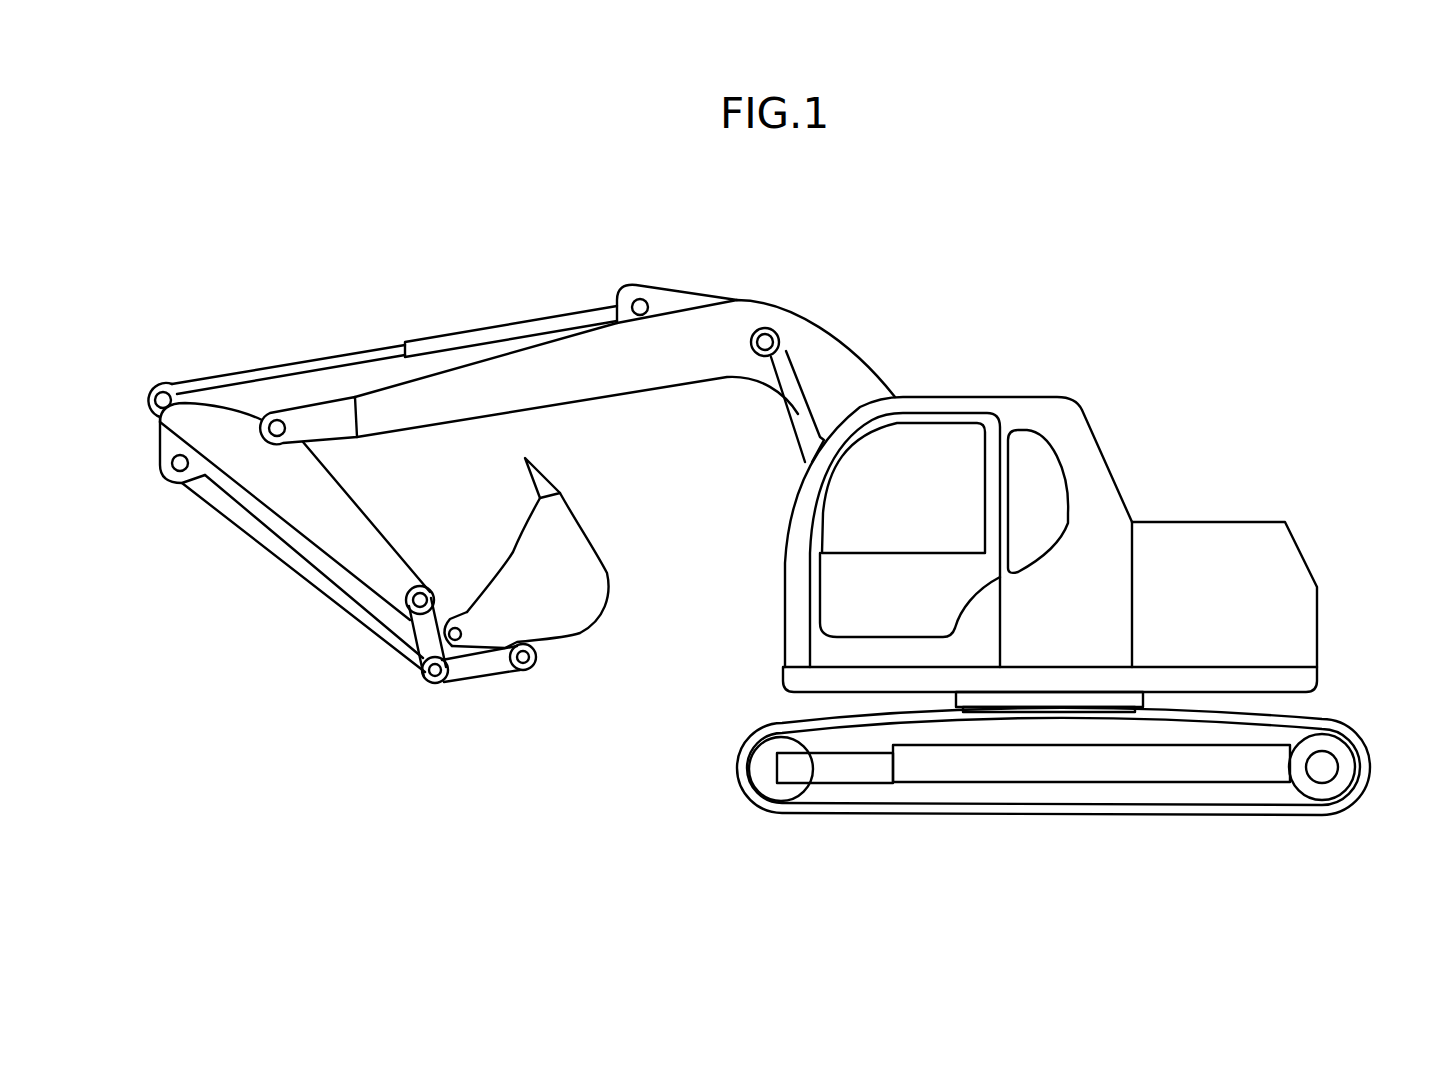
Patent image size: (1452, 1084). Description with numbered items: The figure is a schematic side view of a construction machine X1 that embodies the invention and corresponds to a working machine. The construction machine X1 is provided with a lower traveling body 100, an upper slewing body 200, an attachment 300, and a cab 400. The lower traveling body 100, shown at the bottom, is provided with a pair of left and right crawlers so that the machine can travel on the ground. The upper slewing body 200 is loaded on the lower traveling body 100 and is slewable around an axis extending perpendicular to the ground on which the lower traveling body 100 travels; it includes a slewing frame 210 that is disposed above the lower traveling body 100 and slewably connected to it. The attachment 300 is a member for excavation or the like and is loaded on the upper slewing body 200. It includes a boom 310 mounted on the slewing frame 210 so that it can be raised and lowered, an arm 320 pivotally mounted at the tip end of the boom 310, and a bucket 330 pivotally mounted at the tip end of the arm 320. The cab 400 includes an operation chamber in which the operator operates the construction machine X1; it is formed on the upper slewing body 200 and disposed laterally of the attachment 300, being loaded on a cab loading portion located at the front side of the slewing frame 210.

The construction machine X1 is at (1110, 230).
The lower traveling body 100 is at (963, 810).
The upper slewing body 200 is at (1333, 523).
The slewing frame 210 is at (1297, 682).
The attachment 300 is at (362, 272).
The boom 310 is at (522, 363).
The arm 320 is at (348, 517).
The bucket 330 is at (570, 553).
The cab 400 is at (1083, 418).